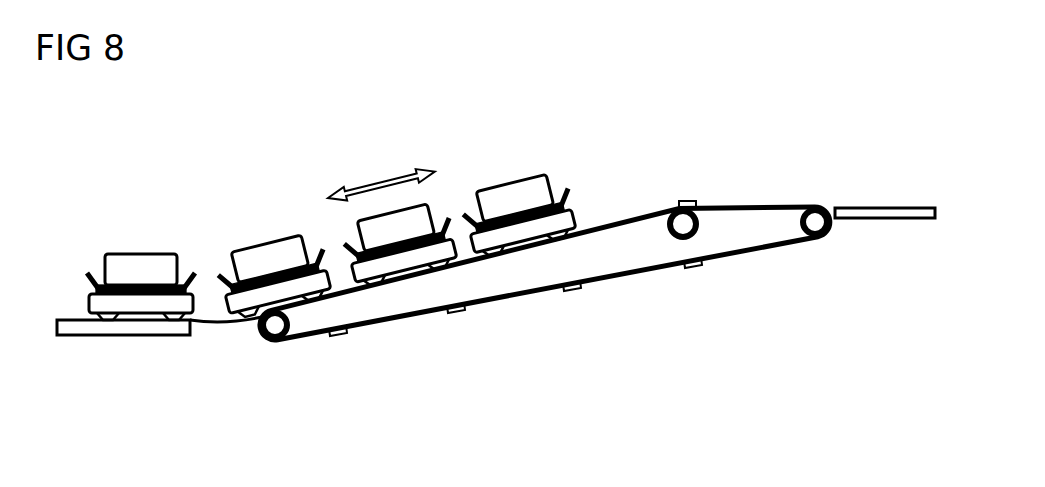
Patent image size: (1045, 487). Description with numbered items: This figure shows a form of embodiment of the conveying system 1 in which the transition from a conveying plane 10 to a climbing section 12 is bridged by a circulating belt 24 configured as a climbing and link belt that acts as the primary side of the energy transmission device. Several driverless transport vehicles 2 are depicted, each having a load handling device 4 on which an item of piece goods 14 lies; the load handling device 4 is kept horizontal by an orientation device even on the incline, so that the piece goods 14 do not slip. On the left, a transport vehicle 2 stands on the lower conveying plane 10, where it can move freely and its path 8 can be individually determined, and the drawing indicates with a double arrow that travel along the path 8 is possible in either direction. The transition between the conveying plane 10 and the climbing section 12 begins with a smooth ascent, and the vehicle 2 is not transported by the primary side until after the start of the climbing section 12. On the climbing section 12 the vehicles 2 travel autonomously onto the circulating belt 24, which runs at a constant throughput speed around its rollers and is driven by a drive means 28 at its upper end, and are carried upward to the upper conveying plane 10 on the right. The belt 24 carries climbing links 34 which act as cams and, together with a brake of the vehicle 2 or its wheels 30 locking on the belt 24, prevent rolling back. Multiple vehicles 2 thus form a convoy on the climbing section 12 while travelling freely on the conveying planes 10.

The conveying system 1 is at (122, 163).
The driverless transport vehicle 2 is at (116, 287).
The load handling device 4 is at (115, 325).
The path 8 is at (378, 172).
The conveying plane 10 is at (157, 391).
The climbing section 12 is at (498, 300).
The piece goods 14 is at (103, 263).
The circulating belt 24 is at (746, 206).
The drive means 28 is at (804, 196).
The running wheel 30 is at (178, 322).
The climbing links 34 is at (688, 201).